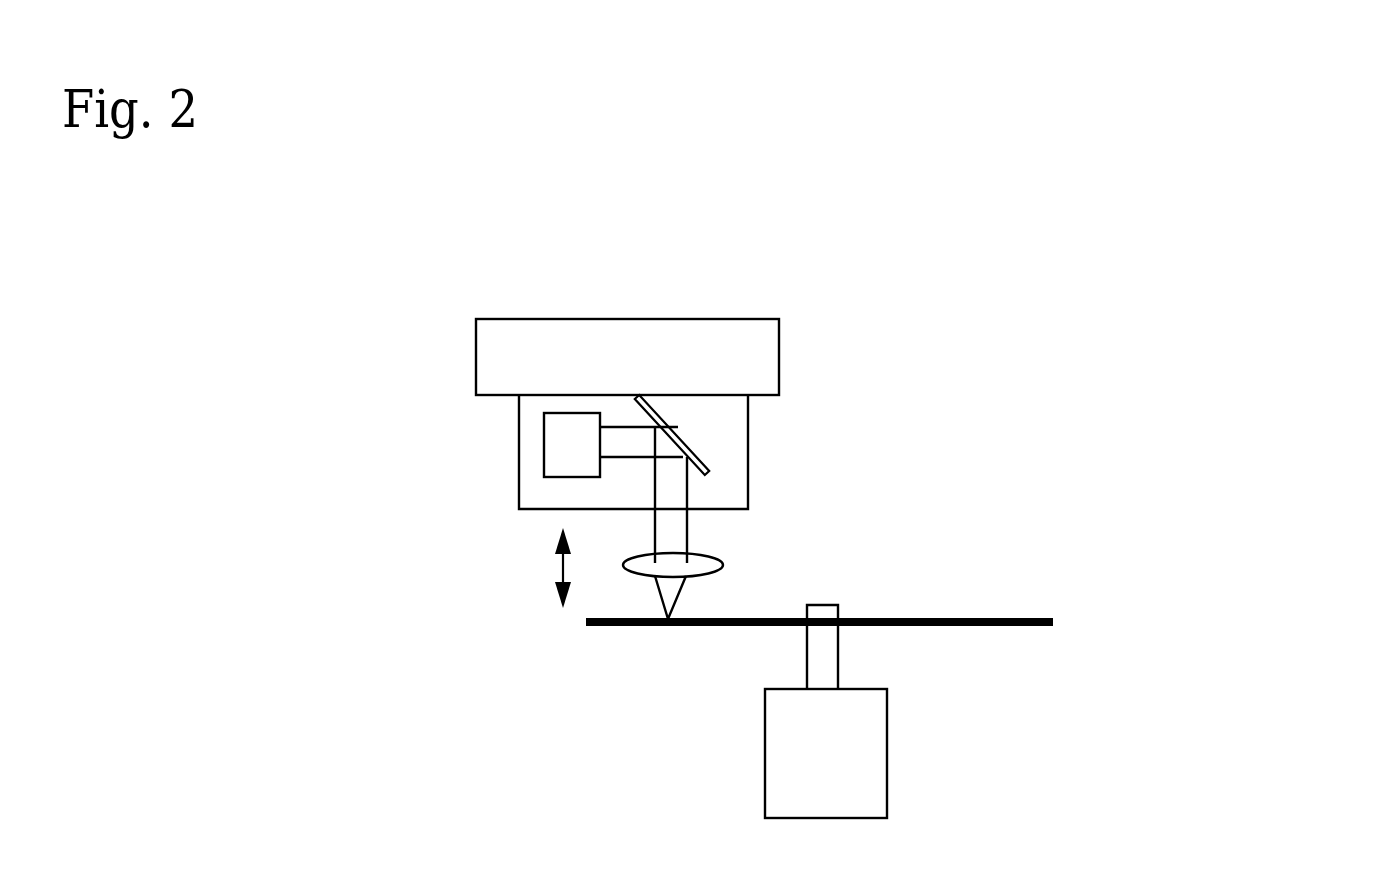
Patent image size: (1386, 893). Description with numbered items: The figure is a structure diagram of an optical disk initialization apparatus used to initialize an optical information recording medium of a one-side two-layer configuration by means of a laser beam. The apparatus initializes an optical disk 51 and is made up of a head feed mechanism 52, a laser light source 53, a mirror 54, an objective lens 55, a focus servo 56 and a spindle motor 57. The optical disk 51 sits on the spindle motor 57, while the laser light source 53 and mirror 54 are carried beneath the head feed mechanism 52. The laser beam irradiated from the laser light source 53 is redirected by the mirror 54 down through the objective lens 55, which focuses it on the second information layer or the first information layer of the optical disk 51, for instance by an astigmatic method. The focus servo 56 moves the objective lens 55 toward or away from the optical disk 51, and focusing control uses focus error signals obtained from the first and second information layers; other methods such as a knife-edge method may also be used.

The optical disk 51 is at (1000, 618).
The head feed mechanism 52 is at (625, 345).
The laser light source 53 is at (577, 439).
The mirror 54 is at (680, 438).
The objective lens 55 is at (707, 557).
The focus servo 56 is at (436, 568).
The spindle motor 57 is at (862, 746).